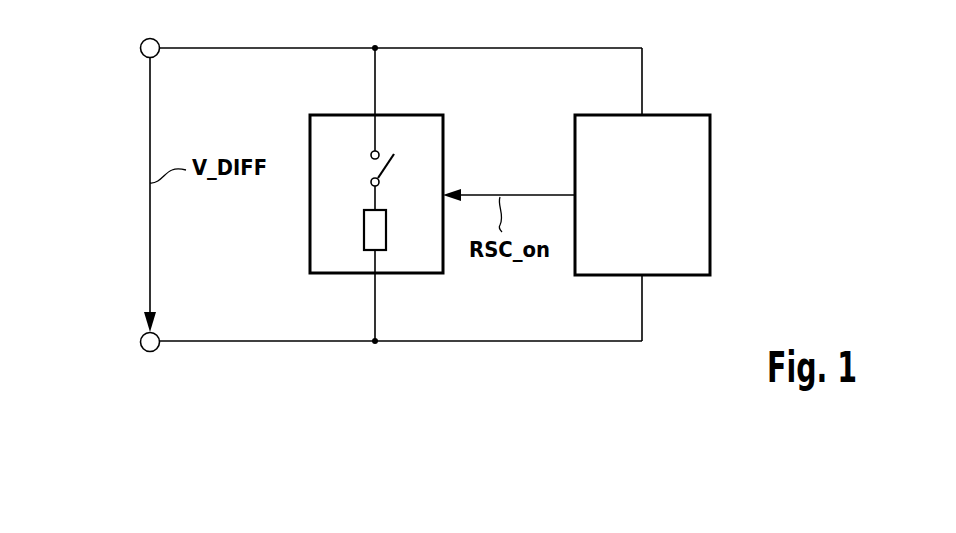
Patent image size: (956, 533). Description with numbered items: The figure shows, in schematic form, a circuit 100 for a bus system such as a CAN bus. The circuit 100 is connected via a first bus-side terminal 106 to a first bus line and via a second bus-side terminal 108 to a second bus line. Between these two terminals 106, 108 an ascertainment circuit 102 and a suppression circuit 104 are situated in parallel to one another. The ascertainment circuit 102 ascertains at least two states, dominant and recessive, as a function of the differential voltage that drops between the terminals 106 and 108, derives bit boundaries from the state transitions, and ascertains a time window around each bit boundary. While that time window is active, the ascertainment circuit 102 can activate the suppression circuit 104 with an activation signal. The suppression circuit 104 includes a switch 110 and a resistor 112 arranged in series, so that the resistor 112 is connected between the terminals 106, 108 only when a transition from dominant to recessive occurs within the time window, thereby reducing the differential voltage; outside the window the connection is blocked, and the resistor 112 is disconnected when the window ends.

The circuit 100 is at (763, 75).
The ascertainment circuit 102 is at (683, 115).
The suppression circuit 104 is at (423, 115).
The bus-side terminal 106 is at (140, 51).
The bus-side terminal 108 is at (140, 343).
The switch 110 is at (365, 162).
The resistor 112 is at (364, 230).